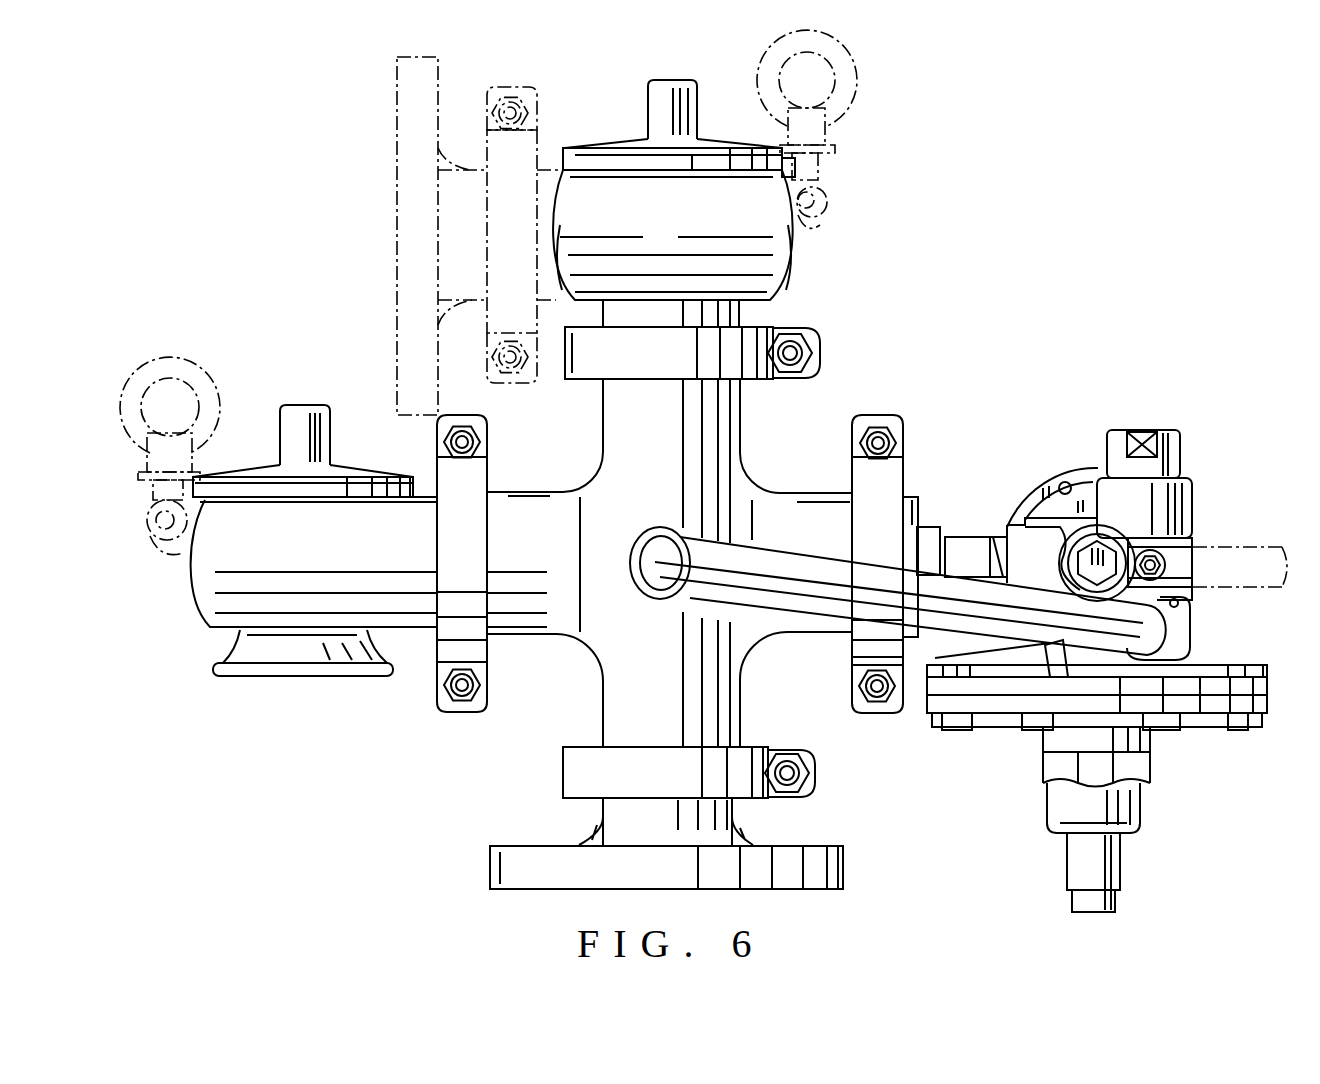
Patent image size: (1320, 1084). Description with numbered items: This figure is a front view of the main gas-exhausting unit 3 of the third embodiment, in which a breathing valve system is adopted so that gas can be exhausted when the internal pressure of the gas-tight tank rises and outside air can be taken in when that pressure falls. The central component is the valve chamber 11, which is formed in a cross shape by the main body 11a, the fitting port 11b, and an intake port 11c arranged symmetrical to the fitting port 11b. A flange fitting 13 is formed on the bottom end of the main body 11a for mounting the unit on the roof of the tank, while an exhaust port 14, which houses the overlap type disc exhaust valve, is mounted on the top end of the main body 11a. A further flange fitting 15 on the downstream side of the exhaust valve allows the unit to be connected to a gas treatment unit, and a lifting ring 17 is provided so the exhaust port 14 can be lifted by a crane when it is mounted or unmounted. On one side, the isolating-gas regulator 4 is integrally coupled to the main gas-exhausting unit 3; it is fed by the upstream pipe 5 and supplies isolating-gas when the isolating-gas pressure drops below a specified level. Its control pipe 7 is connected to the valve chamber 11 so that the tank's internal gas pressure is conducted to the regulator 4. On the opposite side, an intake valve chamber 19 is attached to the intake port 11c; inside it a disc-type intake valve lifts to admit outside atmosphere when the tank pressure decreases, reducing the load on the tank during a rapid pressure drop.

The main gas-exhausting unit 3 is at (573, 672).
The isolating-gas regulator 4 is at (1199, 502).
The upstream pipe 5 is at (1232, 544).
The control pipe 7 is at (860, 583).
The valve chamber 11 is at (703, 457).
The main body 11a is at (590, 715).
The fitting port 11b is at (802, 637).
The intake port 11c is at (522, 634).
The flange fitting 13 is at (490, 858).
The exhaust port 14 is at (786, 258).
The flange fitting 15 is at (410, 206).
The lifting ring 17 is at (852, 96).
The intake valve chamber 19 is at (207, 578).